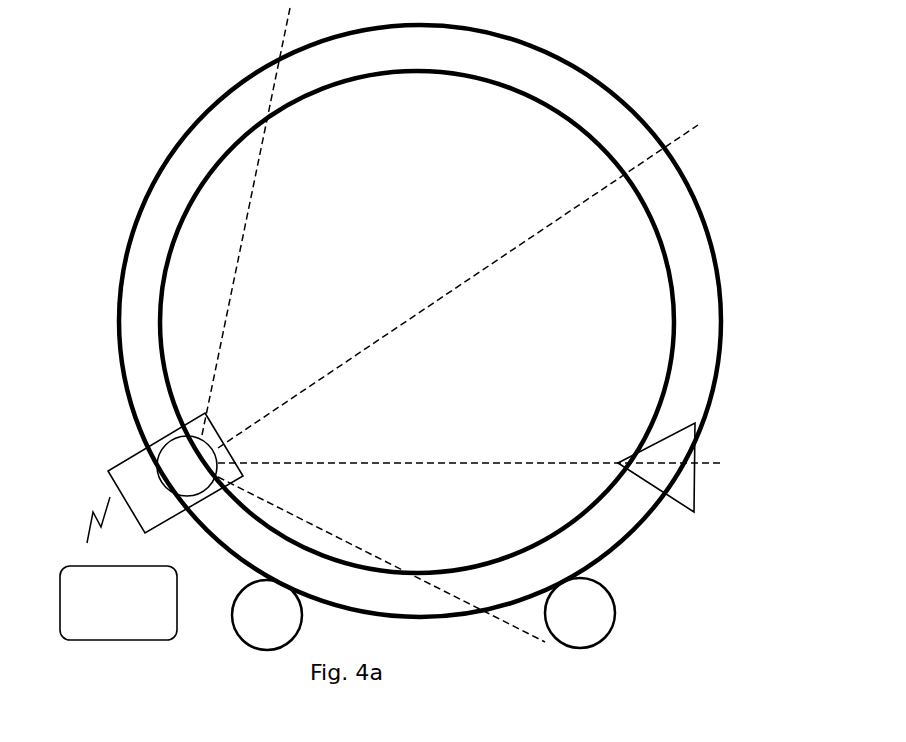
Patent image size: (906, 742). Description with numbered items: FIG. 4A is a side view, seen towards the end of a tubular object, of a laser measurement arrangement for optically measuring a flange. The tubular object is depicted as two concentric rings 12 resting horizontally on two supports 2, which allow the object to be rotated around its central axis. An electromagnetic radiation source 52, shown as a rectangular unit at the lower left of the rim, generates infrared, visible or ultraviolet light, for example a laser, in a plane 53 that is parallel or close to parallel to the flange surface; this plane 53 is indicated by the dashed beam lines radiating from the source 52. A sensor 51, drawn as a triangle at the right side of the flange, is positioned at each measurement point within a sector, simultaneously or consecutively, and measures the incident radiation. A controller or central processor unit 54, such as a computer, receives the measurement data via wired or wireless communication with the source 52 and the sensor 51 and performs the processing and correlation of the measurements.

The rotating drum / ring 12 is at (533, 70).
The plane 53 is at (688, 135).
The electromagnetic radiation source 52 is at (130, 467).
The sensor 51 is at (673, 477).
The controller or central processor unit 54 is at (177, 583).
The supports 2 is at (250, 638).